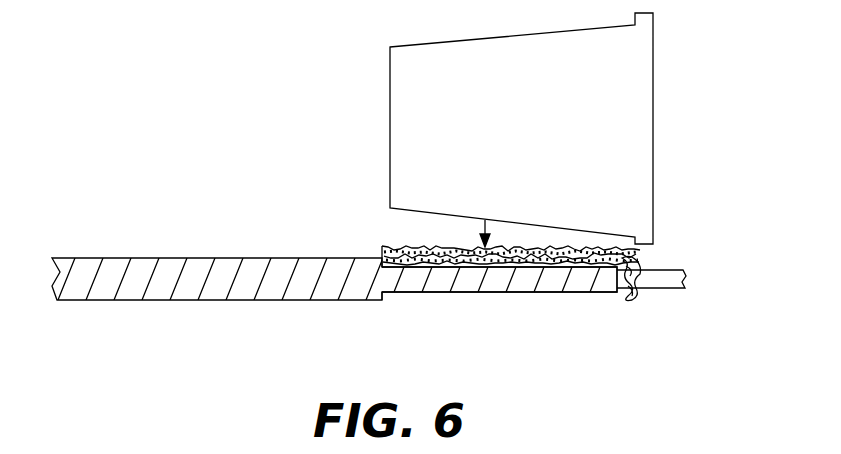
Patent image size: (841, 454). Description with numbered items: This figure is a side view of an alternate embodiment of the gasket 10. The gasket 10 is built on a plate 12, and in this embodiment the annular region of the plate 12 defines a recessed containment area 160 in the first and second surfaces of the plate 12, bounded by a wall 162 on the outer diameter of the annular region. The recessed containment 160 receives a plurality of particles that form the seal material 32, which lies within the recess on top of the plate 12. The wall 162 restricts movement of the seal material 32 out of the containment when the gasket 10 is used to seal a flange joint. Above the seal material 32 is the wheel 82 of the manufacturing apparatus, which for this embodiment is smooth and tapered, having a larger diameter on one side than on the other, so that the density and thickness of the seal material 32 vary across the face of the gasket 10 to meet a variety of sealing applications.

The gasket 10 is at (134, 256).
The plate 12 is at (130, 292).
The seal material 32 is at (472, 250).
The wheel 82 is at (632, 133).
The recessed containment area 160 is at (490, 297).
The wall 162 is at (380, 257).